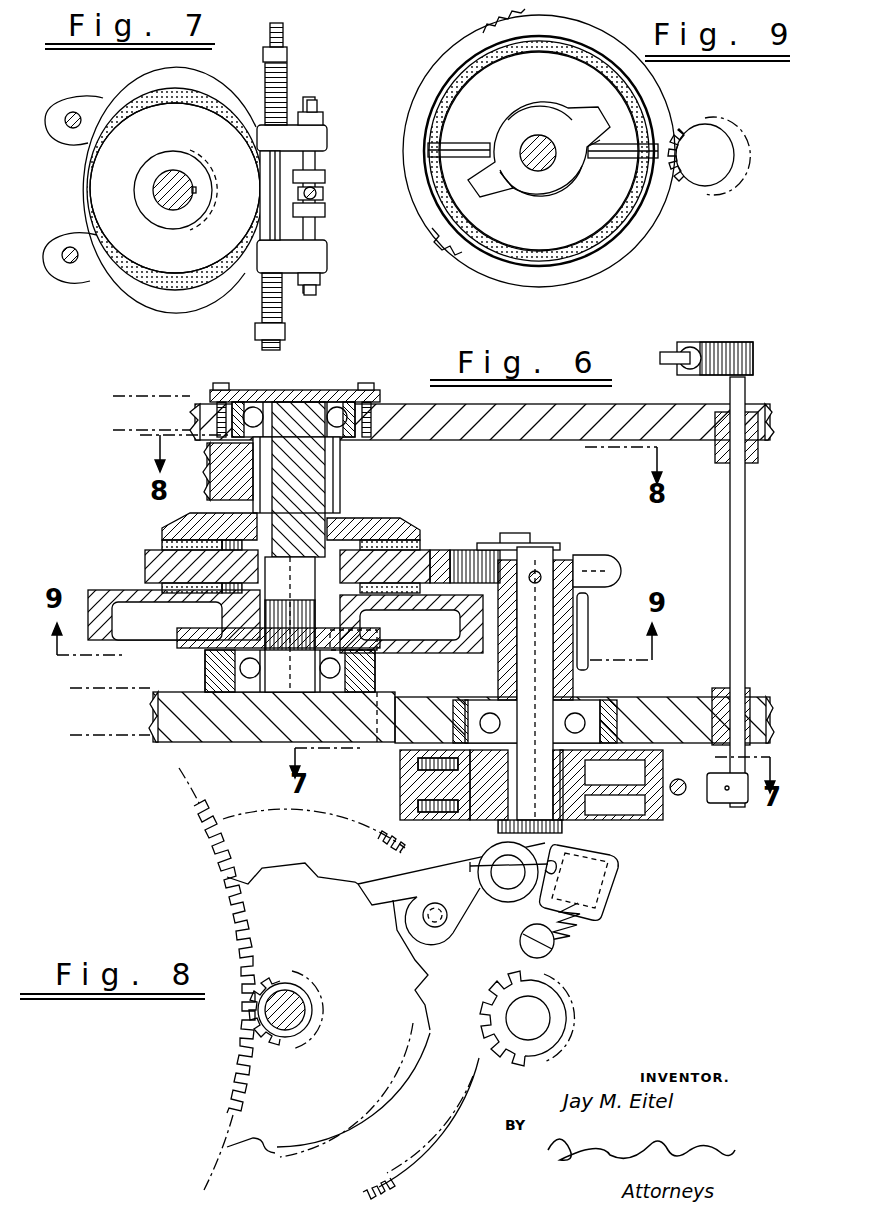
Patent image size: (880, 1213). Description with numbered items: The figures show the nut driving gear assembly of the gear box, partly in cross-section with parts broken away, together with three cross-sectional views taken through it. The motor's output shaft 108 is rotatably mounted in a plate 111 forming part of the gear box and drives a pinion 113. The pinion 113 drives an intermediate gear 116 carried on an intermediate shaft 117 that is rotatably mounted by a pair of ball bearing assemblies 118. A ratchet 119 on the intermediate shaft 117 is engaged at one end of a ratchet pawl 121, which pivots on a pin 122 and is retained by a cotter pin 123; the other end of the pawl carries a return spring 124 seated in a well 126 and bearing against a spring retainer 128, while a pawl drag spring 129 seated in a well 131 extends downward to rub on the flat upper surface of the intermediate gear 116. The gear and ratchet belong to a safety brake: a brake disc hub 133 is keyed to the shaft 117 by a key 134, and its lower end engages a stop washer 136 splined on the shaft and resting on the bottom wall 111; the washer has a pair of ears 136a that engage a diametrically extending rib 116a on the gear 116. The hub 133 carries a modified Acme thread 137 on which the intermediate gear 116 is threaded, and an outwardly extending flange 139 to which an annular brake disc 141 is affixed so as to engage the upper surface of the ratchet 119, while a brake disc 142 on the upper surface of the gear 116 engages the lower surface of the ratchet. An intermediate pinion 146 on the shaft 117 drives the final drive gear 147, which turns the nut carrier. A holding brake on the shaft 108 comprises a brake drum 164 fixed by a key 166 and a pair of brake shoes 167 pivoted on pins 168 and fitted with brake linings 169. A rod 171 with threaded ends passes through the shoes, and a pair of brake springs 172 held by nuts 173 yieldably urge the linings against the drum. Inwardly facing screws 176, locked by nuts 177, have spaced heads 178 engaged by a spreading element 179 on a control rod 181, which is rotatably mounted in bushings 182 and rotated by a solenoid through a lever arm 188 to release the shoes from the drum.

In FIG. 6, the output shaft 108 is at (538, 567).
In FIG. 8, the output shaft 108 is at (540, 1019).
In FIG. 6, the plate 111 is at (658, 712).
In FIG. 6, the pinion 113 is at (582, 636).
In FIG. 8, the pinion 113 is at (518, 1062).
In FIG. 6, the intermediate gear 116 is at (168, 715).
In FIG. 8, the intermediate gear 116 is at (415, 1110).
In FIG. 9, the diametrically extending rib 116a is at (628, 157).
In FIG. 6, the intermediate shaft 117 is at (285, 410).
In FIG. 6, the ball bearing assemblies 118 is at (345, 403).
In FIG. 6, the ratchet 119 is at (150, 560).
In FIG. 8, the ratchet 119 is at (405, 1005).
In FIG. 8, the ratchet pawl 121 is at (617, 859).
In FIG. 8, the pin 122 is at (510, 878).
In FIG. 8, the cotter pin 123 is at (582, 846).
In FIG. 8, the return spring 124 is at (576, 926).
In FIG. 8, the well 126 is at (606, 886).
In FIG. 8, the spring retainer 128 is at (549, 946).
In FIG. 6, the pawl drag spring 129 is at (452, 558).
In FIG. 6, the well 131 is at (421, 550).
In FIG. 6, the brake disc hub 133 is at (330, 535).
In FIG. 6, the key 134 is at (335, 527).
In FIG. 9, the stop washer 136 is at (553, 178).
In FIG. 6, the stop washer 136 is at (196, 648).
In FIG. 9, the ears 136a is at (488, 191).
In FIG. 6, the modified Acme thread 137 is at (115, 596).
In FIG. 6, the outwardly extending flange 139 is at (172, 532).
In FIG. 6, the annular brake disc 141 is at (160, 542).
In FIG. 6, the brake disc 142 is at (395, 616).
In FIG. 6, the intermediate pinion 146 is at (332, 462).
In FIG. 8, the intermediate pinion 146 is at (283, 972).
In FIG. 6, the final drive gear 147 is at (218, 476).
In FIG. 8, the final drive gear 147 is at (234, 932).
In FIG. 7, the brake drum 164 is at (85, 200).
In FIG. 6, the brake drum 164 is at (412, 818).
In FIG. 6, the key 166 is at (576, 778).
In FIG. 7, the brake shoes 167 is at (104, 98).
In FIG. 7, the pins 168 is at (70, 117).
In FIG. 7, the brake linings 169 is at (193, 288).
In FIG. 7, the rod 171 is at (285, 30).
In FIG. 6, the rod 171 is at (680, 796).
In FIG. 7, the brake springs 172 is at (290, 78).
In FIG. 7, the nuts 173 is at (288, 54).
In FIG. 7, the screws 176 is at (316, 168).
In FIG. 7, the nuts 177 is at (323, 116).
In FIG. 7, the heads 178 is at (322, 208).
In FIG. 7, the spreading element 179 is at (298, 193).
In FIG. 6, the spreading element 179 is at (737, 802).
In FIG. 7, the control rod 181 is at (304, 190).
In FIG. 6, the control rod 181 is at (740, 590).
In FIG. 6, the bushings 182 is at (712, 458).
In FIG. 6, the lever arm 188 is at (720, 344).